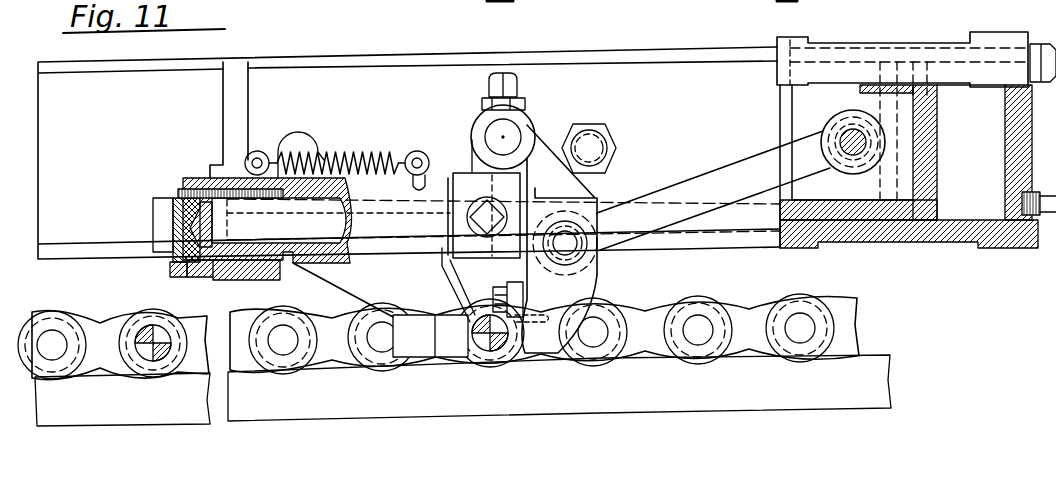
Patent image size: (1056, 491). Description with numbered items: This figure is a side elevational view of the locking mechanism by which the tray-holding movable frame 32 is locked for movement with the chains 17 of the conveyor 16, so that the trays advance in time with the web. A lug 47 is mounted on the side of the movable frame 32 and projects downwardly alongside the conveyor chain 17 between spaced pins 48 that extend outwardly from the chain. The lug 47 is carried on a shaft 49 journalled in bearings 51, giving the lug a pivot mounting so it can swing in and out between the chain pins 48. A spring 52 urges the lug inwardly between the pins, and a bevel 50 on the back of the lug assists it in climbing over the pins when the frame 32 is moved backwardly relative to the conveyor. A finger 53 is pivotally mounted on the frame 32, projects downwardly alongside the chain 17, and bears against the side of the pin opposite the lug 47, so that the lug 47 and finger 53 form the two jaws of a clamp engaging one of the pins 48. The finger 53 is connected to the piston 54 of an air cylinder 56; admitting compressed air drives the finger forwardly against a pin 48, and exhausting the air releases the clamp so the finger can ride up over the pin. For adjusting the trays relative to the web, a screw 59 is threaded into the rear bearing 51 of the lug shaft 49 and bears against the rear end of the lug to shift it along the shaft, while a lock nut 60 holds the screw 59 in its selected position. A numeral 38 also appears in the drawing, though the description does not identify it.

The conveyor 16 is at (737, 315).
The endless chains 17 is at (98, 327).
The movable frame 32 is at (632, 77).
The frame member 38 is at (941, 5).
The lug 47 is at (420, 280).
The pins 48 is at (153, 354).
The shaft 49 is at (270, 240).
The bevel 50 is at (424, 314).
The bearings 51 is at (465, 183).
The spring 52 is at (356, 155).
The finger 53 is at (540, 340).
The piston 54 is at (782, 113).
The air cylinder 56 is at (953, 231).
The screw 59 is at (165, 218).
The lock nut 60 is at (198, 176).